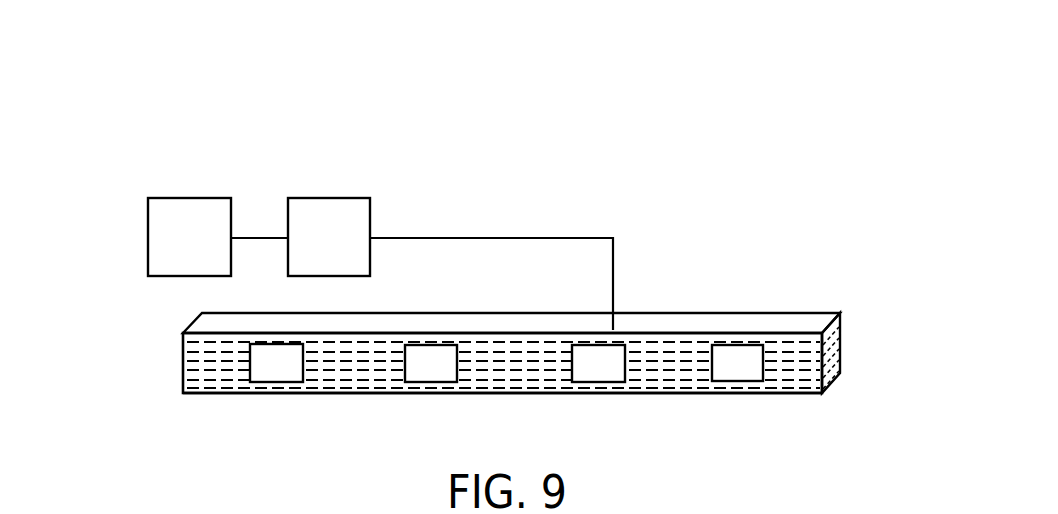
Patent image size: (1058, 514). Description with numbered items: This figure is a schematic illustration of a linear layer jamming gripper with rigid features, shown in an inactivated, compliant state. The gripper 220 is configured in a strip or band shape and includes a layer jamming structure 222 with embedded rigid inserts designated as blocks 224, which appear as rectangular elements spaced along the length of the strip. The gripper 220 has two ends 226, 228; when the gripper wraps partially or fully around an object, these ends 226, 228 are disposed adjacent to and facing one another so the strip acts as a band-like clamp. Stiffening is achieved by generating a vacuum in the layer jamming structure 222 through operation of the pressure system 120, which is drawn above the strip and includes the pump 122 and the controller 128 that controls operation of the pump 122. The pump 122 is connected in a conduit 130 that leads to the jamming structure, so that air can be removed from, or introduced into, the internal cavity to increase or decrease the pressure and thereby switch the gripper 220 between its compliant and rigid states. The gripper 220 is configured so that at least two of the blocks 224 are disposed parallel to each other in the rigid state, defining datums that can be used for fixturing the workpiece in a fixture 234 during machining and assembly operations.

The pressure system 120 is at (238, 172).
The pump 122 is at (355, 248).
The controller 128 is at (215, 248).
The conduit 130 is at (527, 240).
The gripper 220 is at (700, 312).
The layer jamming structure 222 is at (718, 393).
The blocks 224 is at (278, 360).
The end 226 is at (183, 348).
The end 228 is at (833, 345).
The fixture 234 is at (276, 500).